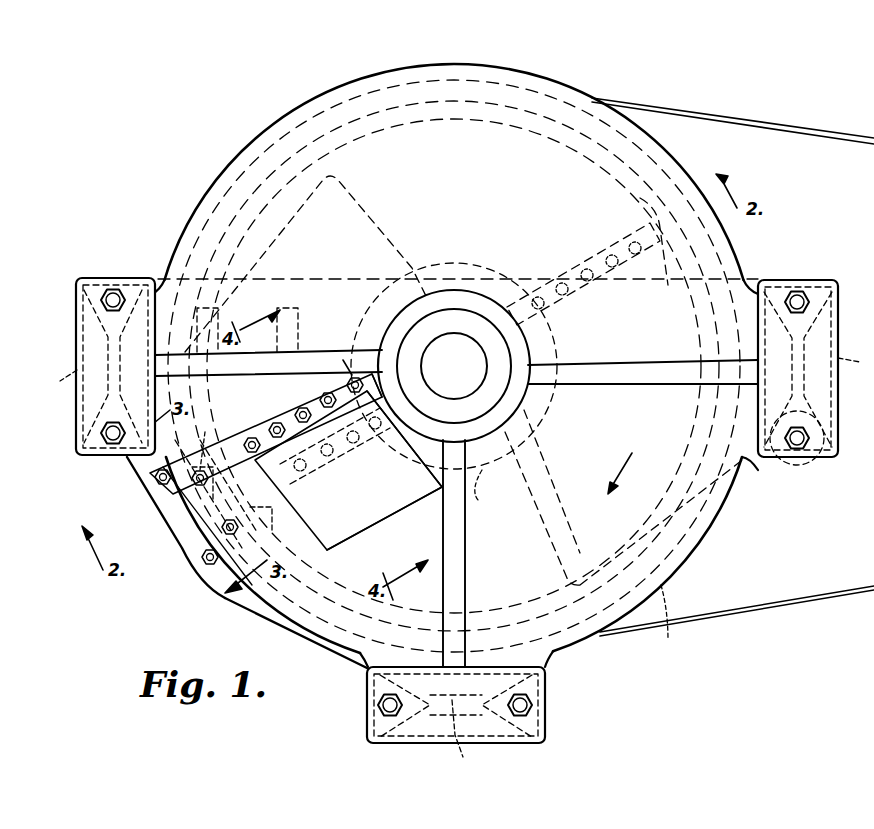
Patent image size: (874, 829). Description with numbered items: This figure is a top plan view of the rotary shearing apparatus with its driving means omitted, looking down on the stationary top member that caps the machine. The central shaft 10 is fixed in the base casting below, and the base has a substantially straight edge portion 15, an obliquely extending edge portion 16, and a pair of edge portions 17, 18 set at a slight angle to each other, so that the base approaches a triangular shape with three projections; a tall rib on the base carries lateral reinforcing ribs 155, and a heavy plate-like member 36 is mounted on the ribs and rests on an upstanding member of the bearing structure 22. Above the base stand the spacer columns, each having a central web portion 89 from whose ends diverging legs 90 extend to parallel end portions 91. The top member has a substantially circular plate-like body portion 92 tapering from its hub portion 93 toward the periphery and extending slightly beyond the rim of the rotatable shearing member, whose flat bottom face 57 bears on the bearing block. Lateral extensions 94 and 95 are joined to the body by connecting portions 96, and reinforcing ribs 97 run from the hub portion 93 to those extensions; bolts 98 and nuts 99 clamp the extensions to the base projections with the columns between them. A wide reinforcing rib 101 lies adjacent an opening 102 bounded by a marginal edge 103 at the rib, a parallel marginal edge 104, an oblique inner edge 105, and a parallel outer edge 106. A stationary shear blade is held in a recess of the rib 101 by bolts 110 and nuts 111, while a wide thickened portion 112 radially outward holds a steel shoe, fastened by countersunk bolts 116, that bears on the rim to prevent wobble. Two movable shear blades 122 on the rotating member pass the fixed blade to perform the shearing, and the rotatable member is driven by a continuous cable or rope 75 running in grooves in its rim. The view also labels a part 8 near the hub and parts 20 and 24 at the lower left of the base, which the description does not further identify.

The hub flange 8 is at (518, 412).
The shaft 10 is at (480, 357).
The straight edge portion 15 is at (542, 277).
The obliquely extending edge portion 16 is at (672, 620).
The edge portion 17 is at (295, 650).
The edge portion 18 is at (177, 543).
The frame arm 20 is at (220, 583).
The bearing structure 22 is at (170, 488).
The bolt 24 is at (160, 473).
The plate-like member 36 is at (503, 521).
The flat bottom face 57 is at (698, 545).
The cable or rope 75 is at (788, 612).
The web portion 89 is at (452, 564).
The diverging legs 90 is at (417, 757).
The parallel end portions 91 is at (135, 283).
The circular body portion 92 is at (597, 106).
The hub portion 93 is at (465, 300).
The lateral extension 94 is at (838, 330).
The lateral extension 95 is at (487, 735).
The connecting portions 96 is at (762, 282).
The reinforcing ribs 97 is at (285, 348).
The bolts 98 is at (108, 292).
The nuts 99 is at (112, 292).
The thickened portion or wide reinforcing rib 101 is at (287, 410).
The opening 102 is at (367, 527).
The marginal edge 103 is at (346, 364).
The marginal edge 104 is at (382, 507).
The inner edge 105 is at (406, 433).
The outer edge 106 is at (323, 520).
The bolts 110 is at (303, 410).
The nuts 111 is at (247, 437).
The wide thickened portion 112 is at (173, 518).
The countersunk bolts 116 is at (200, 468).
The movable shear blade 122 is at (613, 252).
The lateral reinforcing ribs 155 is at (238, 283).